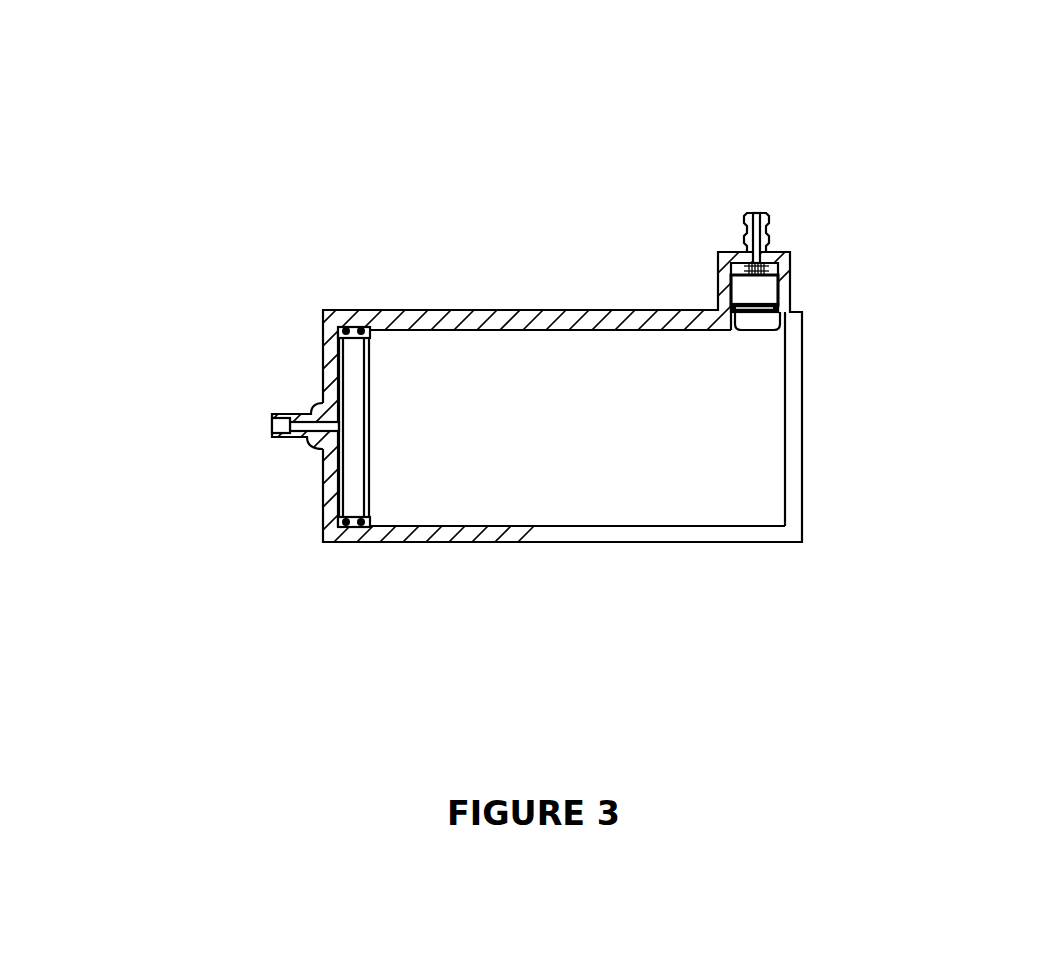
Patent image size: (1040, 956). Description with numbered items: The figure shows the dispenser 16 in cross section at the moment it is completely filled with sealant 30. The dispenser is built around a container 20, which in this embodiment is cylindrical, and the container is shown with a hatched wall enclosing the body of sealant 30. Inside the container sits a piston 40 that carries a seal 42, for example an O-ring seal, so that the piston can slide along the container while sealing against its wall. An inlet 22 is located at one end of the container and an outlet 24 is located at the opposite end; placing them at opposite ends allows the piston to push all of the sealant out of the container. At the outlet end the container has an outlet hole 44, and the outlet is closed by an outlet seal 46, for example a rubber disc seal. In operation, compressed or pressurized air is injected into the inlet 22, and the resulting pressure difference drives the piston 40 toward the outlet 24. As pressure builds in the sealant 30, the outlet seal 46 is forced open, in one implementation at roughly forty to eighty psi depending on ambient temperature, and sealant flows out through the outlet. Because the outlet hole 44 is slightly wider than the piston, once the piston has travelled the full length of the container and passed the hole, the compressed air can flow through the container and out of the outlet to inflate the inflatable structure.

The dispenser 16 is at (492, 147).
The container 20 is at (555, 530).
The inlet 22 is at (280, 428).
The outlet 24 is at (758, 214).
The sealant 30 is at (600, 442).
The piston 40 is at (353, 503).
The seal 42 is at (362, 329).
The outlet hole 44 is at (745, 318).
The outlet seal 46 is at (790, 303).